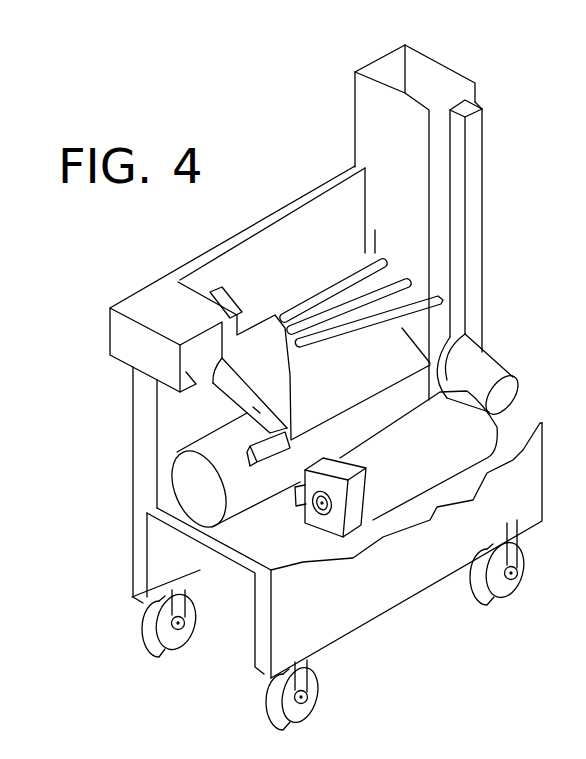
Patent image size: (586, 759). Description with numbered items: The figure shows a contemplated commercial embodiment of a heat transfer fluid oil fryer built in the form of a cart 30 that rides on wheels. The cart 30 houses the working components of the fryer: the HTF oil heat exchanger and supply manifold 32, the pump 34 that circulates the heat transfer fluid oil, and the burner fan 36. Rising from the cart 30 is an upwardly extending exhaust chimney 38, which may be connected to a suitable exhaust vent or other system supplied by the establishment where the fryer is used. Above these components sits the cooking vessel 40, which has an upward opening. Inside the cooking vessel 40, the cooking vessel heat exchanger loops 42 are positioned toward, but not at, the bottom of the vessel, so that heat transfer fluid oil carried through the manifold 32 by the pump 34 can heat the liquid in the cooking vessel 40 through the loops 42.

The cart 30 is at (82, 521).
The HTF oil heat exchanger and supply manifold 32 is at (183, 478).
The pump 34 is at (497, 423).
The burner fan 36 is at (487, 373).
The exhaust chimney 38 is at (470, 200).
The cooking vessel 40 is at (330, 216).
The cooking vessel heat exchanger loops 42 is at (310, 290).